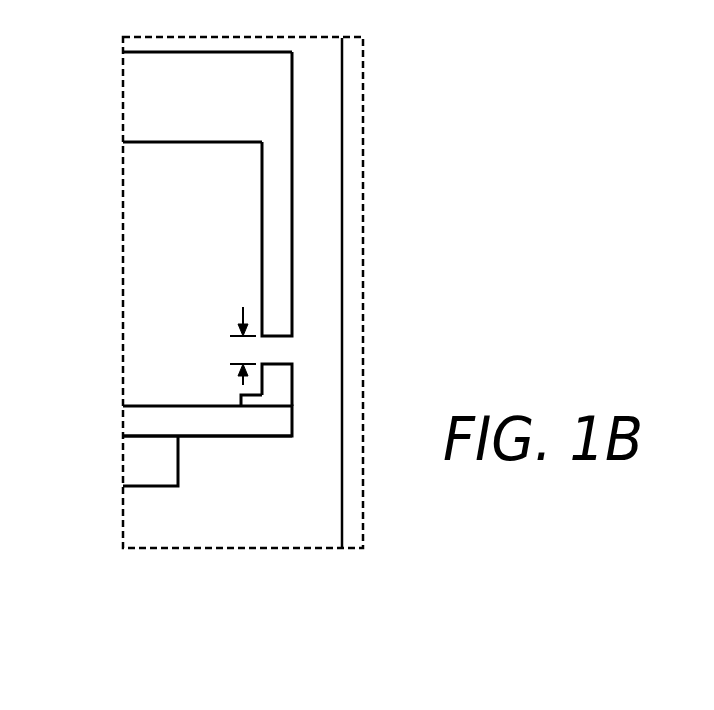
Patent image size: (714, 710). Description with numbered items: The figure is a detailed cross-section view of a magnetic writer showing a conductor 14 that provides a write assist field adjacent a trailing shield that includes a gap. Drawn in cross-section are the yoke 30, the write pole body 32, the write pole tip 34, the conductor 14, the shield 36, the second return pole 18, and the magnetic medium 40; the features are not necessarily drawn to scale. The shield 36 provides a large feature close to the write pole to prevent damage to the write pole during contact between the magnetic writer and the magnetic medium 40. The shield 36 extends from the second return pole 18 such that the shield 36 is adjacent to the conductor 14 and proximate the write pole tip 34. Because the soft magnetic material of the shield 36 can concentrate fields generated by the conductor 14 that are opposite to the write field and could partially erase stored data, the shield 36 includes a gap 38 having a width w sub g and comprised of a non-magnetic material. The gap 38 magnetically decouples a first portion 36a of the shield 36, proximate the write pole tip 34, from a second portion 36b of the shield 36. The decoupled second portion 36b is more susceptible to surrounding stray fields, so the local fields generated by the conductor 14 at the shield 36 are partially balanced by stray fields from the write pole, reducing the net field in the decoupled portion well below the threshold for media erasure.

The conductor 14 is at (287, 402).
The second return pole 18 is at (159, 194).
The yoke 30 is at (135, 472).
The write pole body 32 is at (140, 428).
The write pole tip 34 is at (227, 423).
The shield 36 is at (301, 300).
The first portion of shield 36a is at (273, 205).
The second portion of shield 36b is at (288, 380).
The gap 38 is at (295, 347).
The magnetic medium 40 is at (354, 190).